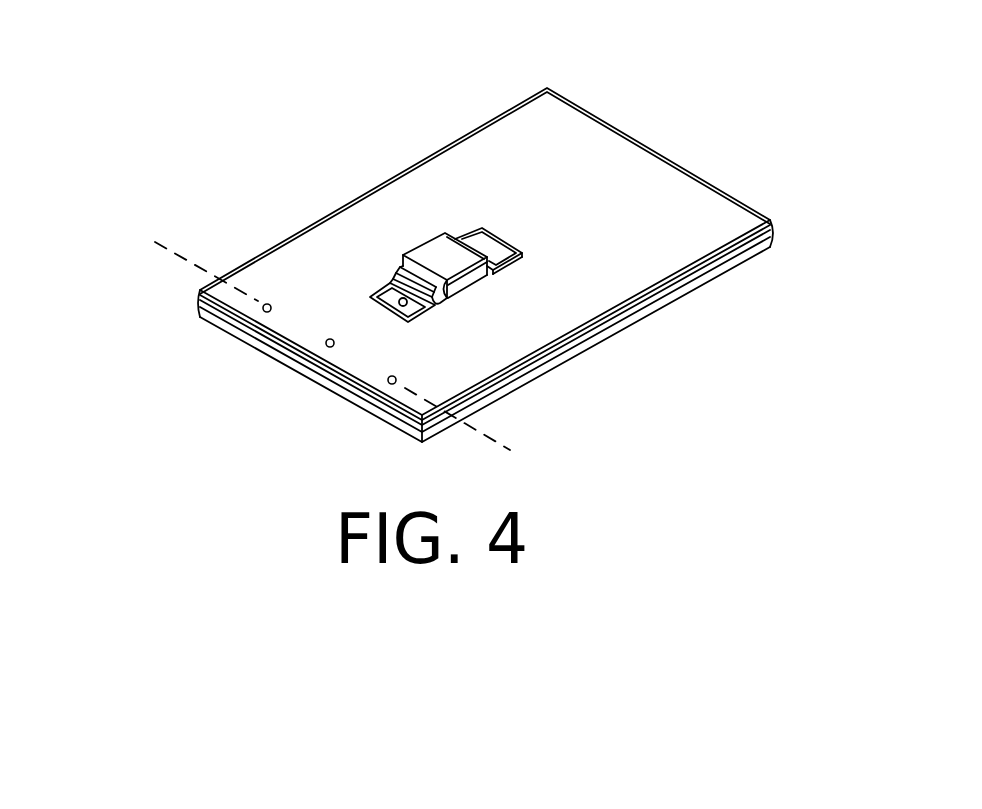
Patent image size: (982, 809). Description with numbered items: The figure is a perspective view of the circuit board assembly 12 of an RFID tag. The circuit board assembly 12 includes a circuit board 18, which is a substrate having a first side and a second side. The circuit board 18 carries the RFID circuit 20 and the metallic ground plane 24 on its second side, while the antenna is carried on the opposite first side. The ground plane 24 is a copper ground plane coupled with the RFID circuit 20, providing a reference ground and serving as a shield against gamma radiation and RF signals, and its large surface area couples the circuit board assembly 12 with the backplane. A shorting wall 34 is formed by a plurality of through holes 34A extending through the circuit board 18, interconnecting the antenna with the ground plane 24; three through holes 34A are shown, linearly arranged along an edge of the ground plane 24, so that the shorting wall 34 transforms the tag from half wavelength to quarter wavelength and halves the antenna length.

The circuit board assembly 12 is at (735, 95).
The circuit board 18 is at (768, 220).
The RFID circuit 20 is at (418, 245).
The ground plane 24 is at (538, 140).
The shorting wall 34 is at (198, 268).
The through holes 34A is at (388, 381).